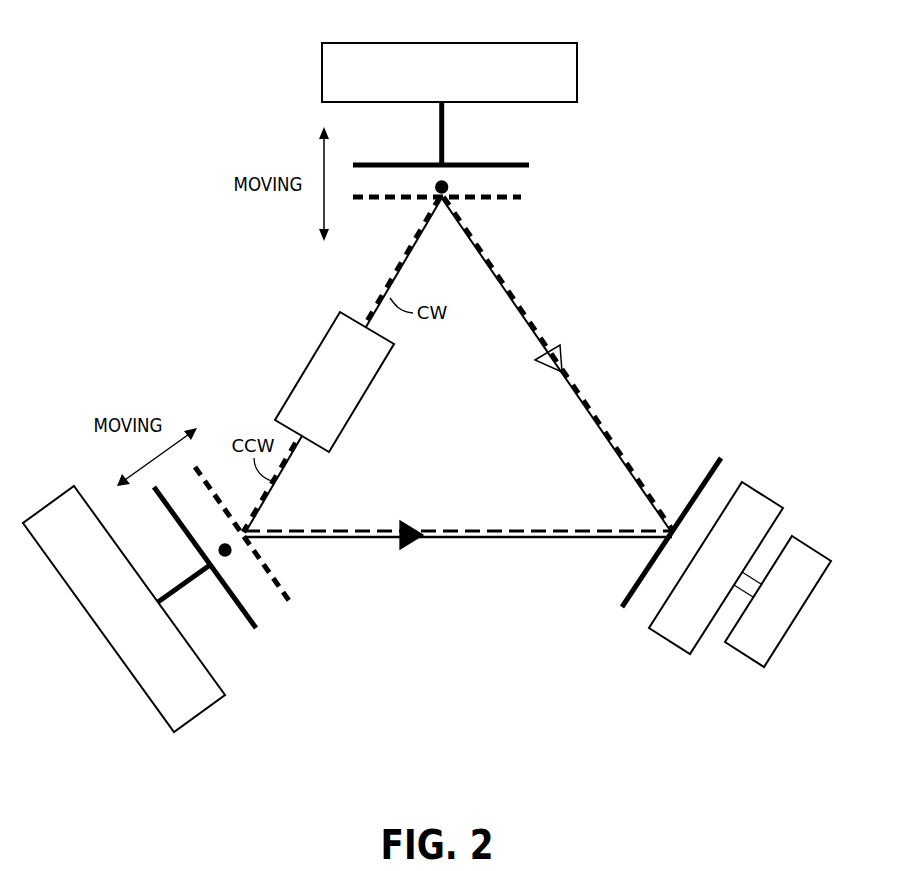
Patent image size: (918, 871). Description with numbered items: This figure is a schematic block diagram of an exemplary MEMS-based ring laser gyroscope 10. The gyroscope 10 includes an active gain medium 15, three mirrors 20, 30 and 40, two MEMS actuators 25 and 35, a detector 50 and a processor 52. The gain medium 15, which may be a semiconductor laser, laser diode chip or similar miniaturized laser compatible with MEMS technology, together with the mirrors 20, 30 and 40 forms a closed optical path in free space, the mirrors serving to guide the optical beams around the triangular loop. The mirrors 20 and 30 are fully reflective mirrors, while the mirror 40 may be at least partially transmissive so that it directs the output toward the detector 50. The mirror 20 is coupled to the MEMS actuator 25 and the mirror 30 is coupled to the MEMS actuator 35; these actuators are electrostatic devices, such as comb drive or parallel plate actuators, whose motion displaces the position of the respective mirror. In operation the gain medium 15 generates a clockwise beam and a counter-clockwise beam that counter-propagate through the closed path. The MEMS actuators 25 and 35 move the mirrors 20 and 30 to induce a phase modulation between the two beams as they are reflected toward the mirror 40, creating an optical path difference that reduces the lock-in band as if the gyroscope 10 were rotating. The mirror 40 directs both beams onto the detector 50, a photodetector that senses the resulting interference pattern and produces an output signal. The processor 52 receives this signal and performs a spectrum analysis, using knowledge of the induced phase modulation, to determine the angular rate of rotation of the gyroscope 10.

The MEMS-based ring laser gyroscope 10 is at (172, 118).
The active gain medium 15 is at (302, 373).
The mirror 20 is at (385, 165).
The MEMS actuator 25 is at (532, 43).
The mirror 30 is at (257, 630).
The MEMS actuator 35 is at (163, 727).
The mirror 40 is at (628, 607).
The detector 50 is at (702, 643).
The processor 52 is at (805, 540).